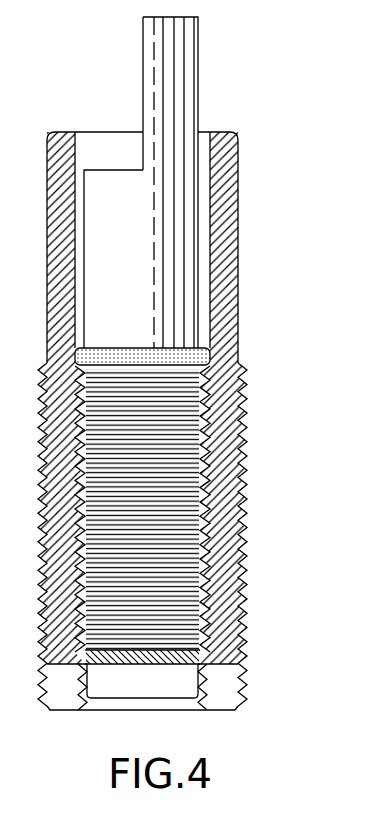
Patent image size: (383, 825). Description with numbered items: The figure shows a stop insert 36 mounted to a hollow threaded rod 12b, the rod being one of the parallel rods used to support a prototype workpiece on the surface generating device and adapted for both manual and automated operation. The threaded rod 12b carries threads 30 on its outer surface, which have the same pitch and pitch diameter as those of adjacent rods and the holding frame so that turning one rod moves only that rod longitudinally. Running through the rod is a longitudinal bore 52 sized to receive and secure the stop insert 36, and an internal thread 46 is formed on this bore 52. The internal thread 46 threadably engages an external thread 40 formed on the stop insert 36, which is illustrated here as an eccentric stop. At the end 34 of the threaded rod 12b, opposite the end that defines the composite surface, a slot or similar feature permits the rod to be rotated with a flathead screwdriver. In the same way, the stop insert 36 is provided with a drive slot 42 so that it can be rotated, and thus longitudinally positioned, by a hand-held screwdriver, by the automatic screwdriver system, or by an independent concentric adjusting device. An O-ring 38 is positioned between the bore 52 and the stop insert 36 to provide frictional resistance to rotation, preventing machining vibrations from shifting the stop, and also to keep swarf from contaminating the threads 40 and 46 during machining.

The threaded rod 12b is at (232, 182).
The threads 30 is at (207, 507).
The end 34 is at (225, 685).
The stop insert 36 is at (185, 112).
The O-ring 38 is at (210, 353).
The external thread 40 is at (212, 555).
The drive slot 42 is at (153, 683).
The internal thread 46 is at (88, 673).
The longitudinal bore 52 is at (73, 157).